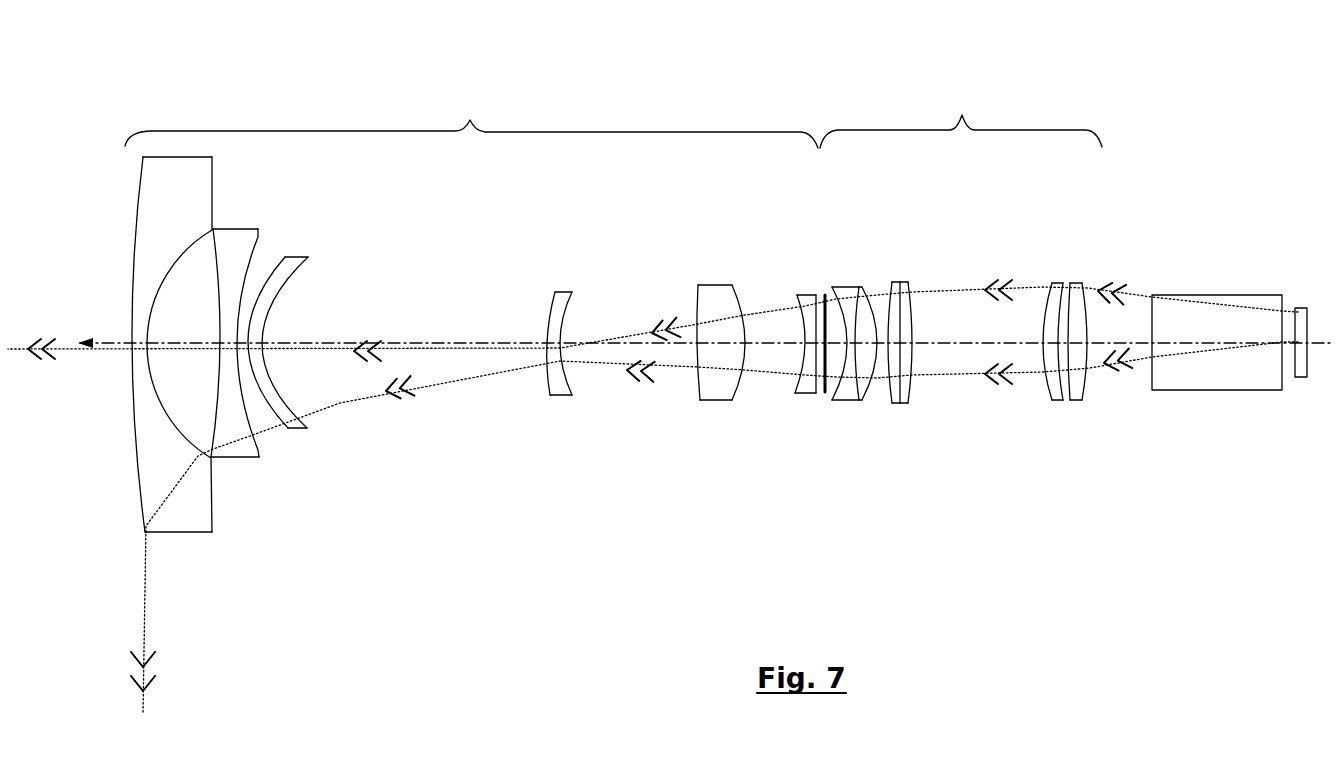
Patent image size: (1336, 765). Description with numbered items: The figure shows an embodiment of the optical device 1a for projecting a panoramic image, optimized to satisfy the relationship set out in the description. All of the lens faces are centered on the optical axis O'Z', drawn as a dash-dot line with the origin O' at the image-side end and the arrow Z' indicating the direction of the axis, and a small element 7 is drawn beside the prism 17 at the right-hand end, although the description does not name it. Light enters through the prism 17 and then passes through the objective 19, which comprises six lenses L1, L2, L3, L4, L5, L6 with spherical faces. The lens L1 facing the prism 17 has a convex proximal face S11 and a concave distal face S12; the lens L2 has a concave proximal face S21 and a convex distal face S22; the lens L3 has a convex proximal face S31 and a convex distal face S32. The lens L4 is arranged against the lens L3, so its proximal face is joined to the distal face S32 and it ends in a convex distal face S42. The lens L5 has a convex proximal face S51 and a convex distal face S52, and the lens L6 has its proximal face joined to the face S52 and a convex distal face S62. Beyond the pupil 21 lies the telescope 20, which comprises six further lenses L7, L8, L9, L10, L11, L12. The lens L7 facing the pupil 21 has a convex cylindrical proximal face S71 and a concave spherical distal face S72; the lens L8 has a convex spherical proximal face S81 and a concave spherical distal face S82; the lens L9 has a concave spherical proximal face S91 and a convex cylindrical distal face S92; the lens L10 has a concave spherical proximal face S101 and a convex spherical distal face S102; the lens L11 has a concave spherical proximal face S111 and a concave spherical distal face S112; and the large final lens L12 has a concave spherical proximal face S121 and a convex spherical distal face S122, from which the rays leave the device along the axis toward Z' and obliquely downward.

The optical device 1a is at (970, 535).
The image sensor / sensor plane 7 is at (1299, 378).
The prism 17 is at (1270, 297).
The objective 19 is at (962, 115).
The telescope 20 is at (470, 120).
The pupil 21 is at (825, 393).
The lens L1 is at (1106, 331).
The lens L2 is at (1027, 316).
The lens L3 is at (948, 355).
The lens L4 is at (924, 359).
The lens L5 is at (884, 322).
The lens L6 is at (829, 350).
The lens L7 is at (768, 341).
The lens L8 is at (682, 364).
The lens L9 is at (557, 372).
The lens L10 is at (221, 375).
The lens L11 is at (206, 371).
The lens L12 is at (188, 382).
The convex proximal face S11 is at (1088, 325).
The concave distal face S12 is at (1071, 322).
The concave proximal face S21 is at (1057, 318).
The convex distal face S22 is at (1045, 318).
The convex proximal face S31 is at (913, 365).
The convex distal face S32 is at (903, 322).
The convex distal face S42 is at (891, 320).
The convex proximal face S51 is at (875, 318).
The convex distal face S52 is at (857, 318).
The convex distal face S62 is at (836, 315).
The convex cylindrical proximal face S71 is at (815, 325).
The concave spherical distal face S72 is at (796, 330).
The convex spherical proximal face S81 is at (737, 372).
The concave spherical distal face S82 is at (698, 300).
The concave spherical proximal face S91 is at (570, 305).
The convex cylindrical distal face S92 is at (552, 305).
The concave spherical proximal face S101 is at (303, 289).
The convex spherical distal face S102 is at (247, 330).
The concave spherical proximal face S111 is at (248, 268).
The concave spherical distal face S112 is at (217, 283).
The concave spherical proximal face S121 is at (193, 247).
The convex spherical distal face S122 is at (141, 193).
The optical axis Z' is at (85, 367).
The optical axis O' is at (113, 384).